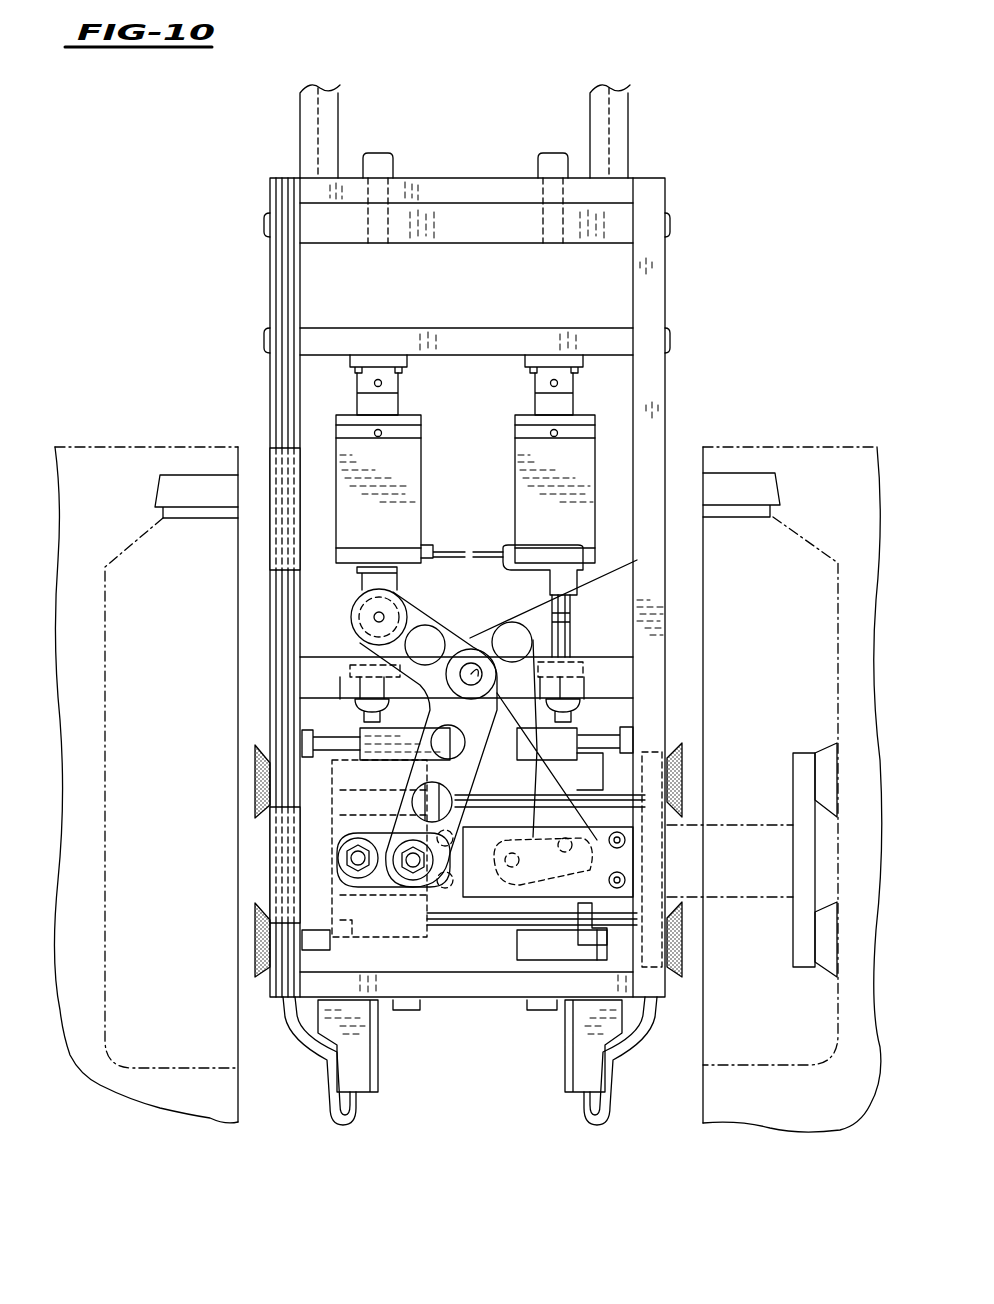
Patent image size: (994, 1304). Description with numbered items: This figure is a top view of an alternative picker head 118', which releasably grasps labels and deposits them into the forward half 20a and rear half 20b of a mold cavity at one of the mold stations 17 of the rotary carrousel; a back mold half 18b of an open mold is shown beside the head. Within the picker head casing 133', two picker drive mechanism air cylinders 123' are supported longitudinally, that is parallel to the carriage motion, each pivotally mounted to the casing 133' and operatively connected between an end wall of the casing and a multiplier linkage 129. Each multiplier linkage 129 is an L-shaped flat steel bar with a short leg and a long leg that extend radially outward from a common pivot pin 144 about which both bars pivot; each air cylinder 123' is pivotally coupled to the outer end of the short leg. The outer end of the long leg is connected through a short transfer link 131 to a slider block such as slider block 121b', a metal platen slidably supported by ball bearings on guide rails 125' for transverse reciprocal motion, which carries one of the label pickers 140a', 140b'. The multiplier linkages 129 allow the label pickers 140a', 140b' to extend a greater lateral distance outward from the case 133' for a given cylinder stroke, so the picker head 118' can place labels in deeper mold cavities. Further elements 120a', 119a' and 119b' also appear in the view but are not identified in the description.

The picker head 118' is at (529, 541).
The picker head casing 133′ is at (660, 226).
The picker drive mechanism air cylinder 123' is at (453, 515).
The multiplier linkage 129 is at (412, 600).
The common pivot pin 144 is at (480, 678).
The slider block 121b' is at (302, 819).
The guide rail 125' is at (651, 839).
The guide member 120a' is at (712, 859).
The right locating wedges 119a' is at (729, 884).
The left locating wedges 119b' is at (194, 861).
The short transfer link 131 is at (380, 880).
The label picker 140a' is at (637, 1070).
The label picker 140b' is at (303, 1085).
The mold station 17 is at (806, 444).
The back mold half 18b is at (108, 467).
The forward half of mold cavity 20a is at (832, 563).
The rear half of mold cavity 20b is at (107, 690).